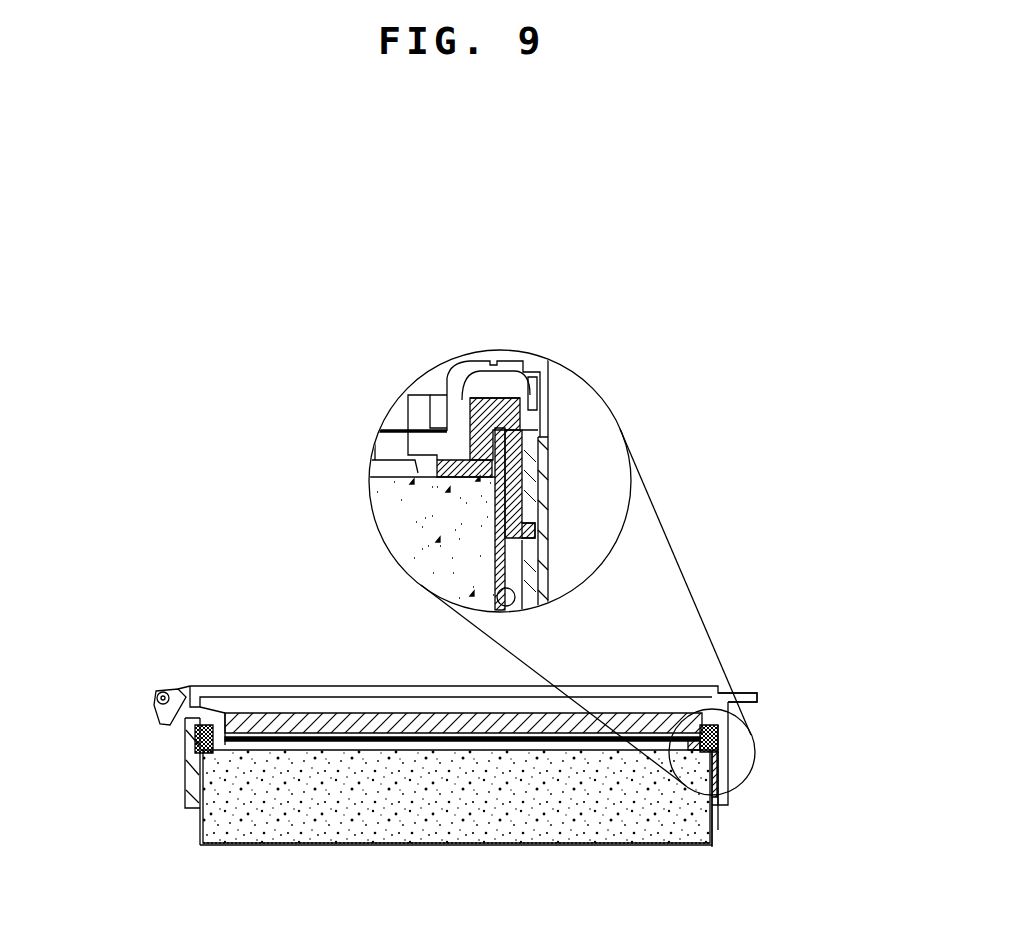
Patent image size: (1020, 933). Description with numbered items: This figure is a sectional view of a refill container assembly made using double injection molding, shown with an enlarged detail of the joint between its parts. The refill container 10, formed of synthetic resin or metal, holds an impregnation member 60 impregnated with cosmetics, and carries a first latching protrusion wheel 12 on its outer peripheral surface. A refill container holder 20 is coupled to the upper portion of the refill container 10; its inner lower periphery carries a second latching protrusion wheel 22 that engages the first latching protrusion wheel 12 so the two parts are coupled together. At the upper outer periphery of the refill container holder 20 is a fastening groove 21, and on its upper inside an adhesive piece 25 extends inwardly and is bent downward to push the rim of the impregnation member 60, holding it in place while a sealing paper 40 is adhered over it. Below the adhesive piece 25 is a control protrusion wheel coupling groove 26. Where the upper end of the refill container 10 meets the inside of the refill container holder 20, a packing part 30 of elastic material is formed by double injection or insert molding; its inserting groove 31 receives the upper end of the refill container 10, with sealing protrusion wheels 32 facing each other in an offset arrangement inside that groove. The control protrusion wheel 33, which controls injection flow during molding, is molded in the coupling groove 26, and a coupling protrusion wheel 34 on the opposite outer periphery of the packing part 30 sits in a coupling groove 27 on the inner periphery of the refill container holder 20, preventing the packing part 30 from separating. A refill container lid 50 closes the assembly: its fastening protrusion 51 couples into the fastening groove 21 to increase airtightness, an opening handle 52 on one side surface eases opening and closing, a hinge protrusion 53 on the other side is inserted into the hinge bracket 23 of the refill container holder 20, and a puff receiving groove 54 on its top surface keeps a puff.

The refill container 10 is at (303, 854).
The first latching protrusion wheel 12 is at (708, 795).
The refill container holder 20 is at (172, 772).
The fastening groove 21 is at (524, 368).
The second latching protrusion wheel 22 is at (723, 805).
The hinge bracket 23 is at (185, 728).
The adhesive piece 25 is at (472, 472).
The control protrusion wheel coupling groove 26 is at (447, 430).
The coupling groove 27 is at (545, 525).
The packing part 30 is at (497, 386).
The inserting groove 31 is at (493, 485).
The sealing protrusion wheels 32 is at (500, 445).
The control protrusion wheel 33 is at (490, 477).
The coupling protrusion wheel 34 is at (536, 537).
The sealing paper 40 is at (497, 742).
The refill container lid 50 is at (241, 697).
The fastening protrusion 51 is at (537, 398).
The opening handle 52 is at (757, 700).
The hinge protrusion 53 is at (158, 690).
The puff receiving groove 54 is at (376, 703).
The impregnation member 60 is at (426, 822).